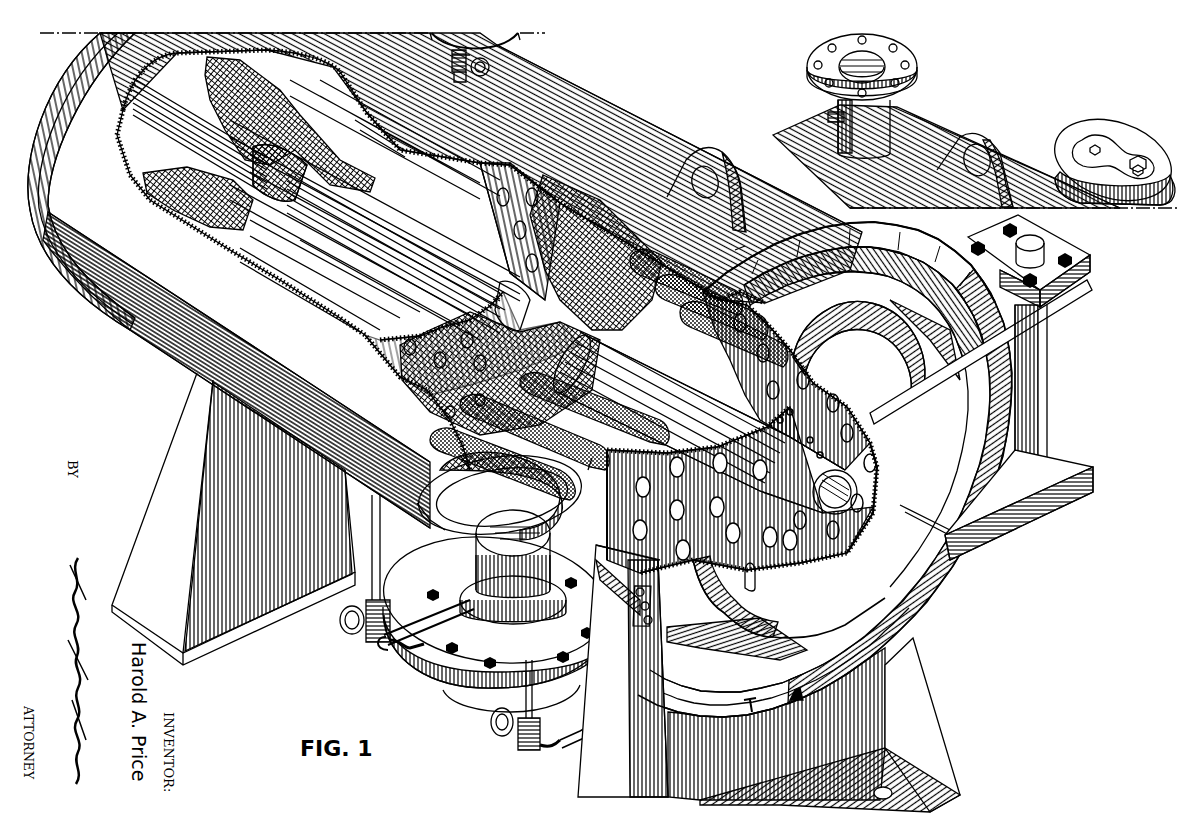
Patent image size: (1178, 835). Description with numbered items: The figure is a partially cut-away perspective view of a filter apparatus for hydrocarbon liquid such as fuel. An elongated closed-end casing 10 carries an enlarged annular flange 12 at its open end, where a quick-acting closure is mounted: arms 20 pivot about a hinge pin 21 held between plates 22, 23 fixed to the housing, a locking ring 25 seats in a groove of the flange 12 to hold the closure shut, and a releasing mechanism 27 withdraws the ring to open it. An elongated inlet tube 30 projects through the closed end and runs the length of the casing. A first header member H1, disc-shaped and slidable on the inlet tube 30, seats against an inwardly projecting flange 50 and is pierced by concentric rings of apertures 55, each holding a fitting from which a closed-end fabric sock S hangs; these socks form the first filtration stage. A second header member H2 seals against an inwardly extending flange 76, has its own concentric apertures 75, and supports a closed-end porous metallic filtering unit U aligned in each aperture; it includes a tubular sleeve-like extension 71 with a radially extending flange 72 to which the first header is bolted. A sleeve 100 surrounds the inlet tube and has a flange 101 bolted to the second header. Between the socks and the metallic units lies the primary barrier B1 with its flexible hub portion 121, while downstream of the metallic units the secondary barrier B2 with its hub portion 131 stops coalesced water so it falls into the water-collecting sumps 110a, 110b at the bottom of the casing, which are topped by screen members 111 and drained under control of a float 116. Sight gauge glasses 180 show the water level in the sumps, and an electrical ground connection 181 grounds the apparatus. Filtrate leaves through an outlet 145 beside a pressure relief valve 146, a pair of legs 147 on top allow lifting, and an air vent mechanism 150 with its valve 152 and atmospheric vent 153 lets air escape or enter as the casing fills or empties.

The casing 10 is at (661, 127).
The annular flange 12 is at (950, 583).
The arms 20 is at (1025, 333).
The hinge pin 21 is at (1040, 375).
The plate 22 is at (1060, 240).
The plate 23 is at (1058, 500).
The locking ring 25 is at (745, 702).
The releasing mechanism 27 is at (652, 618).
The inlet tube 30 is at (196, 98).
The inwardly projecting flange 50 is at (775, 260).
The apertures 55 is at (848, 526).
The tubular sleeve-like extension 71 is at (609, 375).
The annular radially extending flange 72 is at (748, 420).
The apertures 75 is at (388, 358).
The inwardly extending flange 76 is at (508, 122).
The sleeve 100 is at (375, 206).
The annular radially extending flange 101 is at (503, 268).
The water-collecting sump 110a is at (583, 758).
The water-collecting sump 110b is at (460, 557).
The screen members 111 is at (466, 460).
The float 116 is at (513, 567).
The hub portion 121 is at (673, 413).
The hub portion 131 is at (262, 172).
The outlet 145 is at (893, 128).
The pressure relief valve 146 is at (830, 115).
The legs 147 is at (722, 152).
The air vent mechanism 150 is at (520, 42).
The valve 152 is at (452, 50).
The vent 153 is at (1138, 158).
The sight gauge glasses 180 is at (375, 594).
The electrical ground connection 181 is at (500, 704).
The primary selectively permeable barrier B1 is at (425, 398).
The secondary selectively permeable barrier B2 is at (165, 198).
The first header member H1 is at (847, 408).
The second header member H2 is at (540, 148).
The sock S is at (740, 248).
The porous metallic filtering units U is at (250, 253).